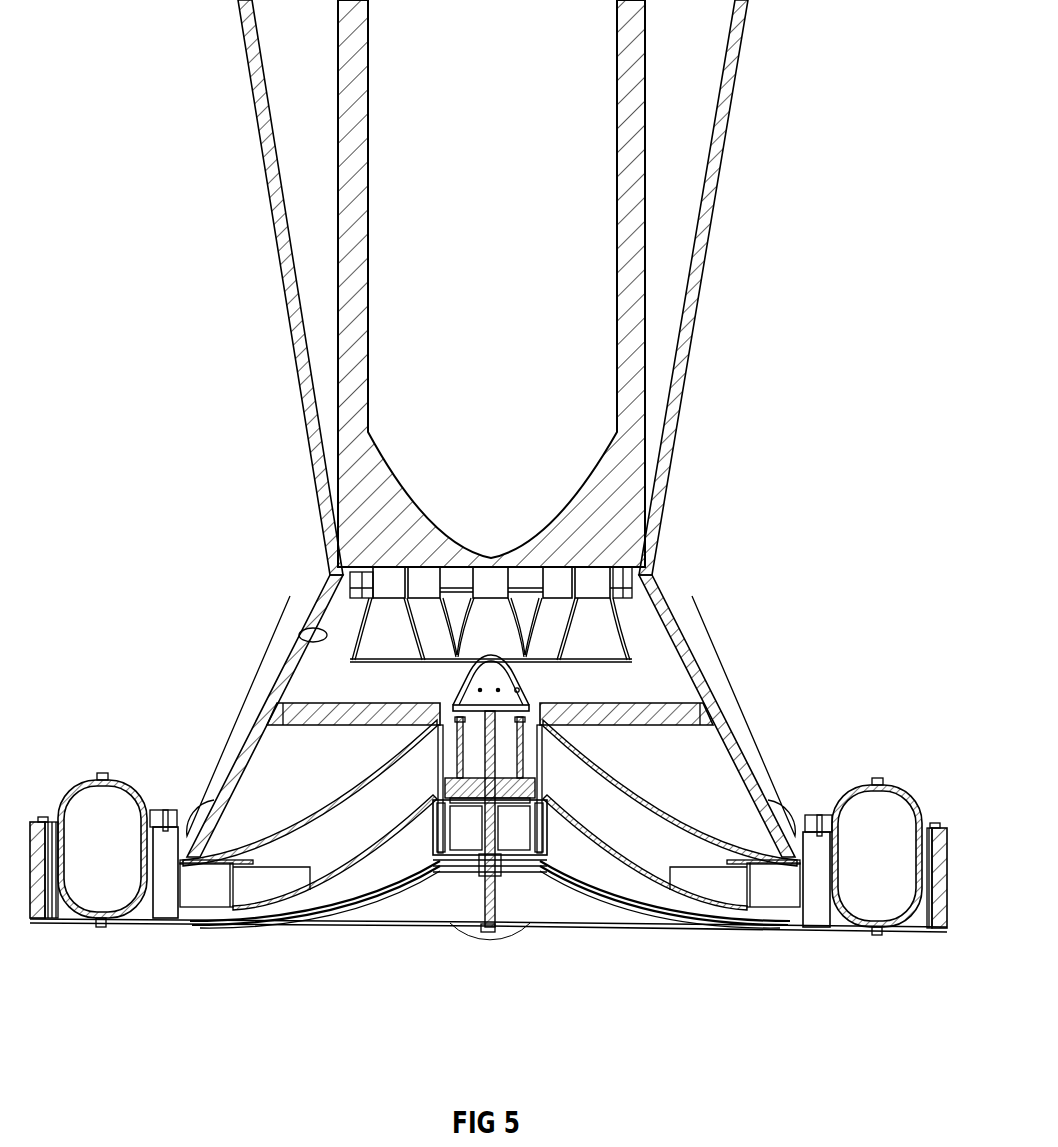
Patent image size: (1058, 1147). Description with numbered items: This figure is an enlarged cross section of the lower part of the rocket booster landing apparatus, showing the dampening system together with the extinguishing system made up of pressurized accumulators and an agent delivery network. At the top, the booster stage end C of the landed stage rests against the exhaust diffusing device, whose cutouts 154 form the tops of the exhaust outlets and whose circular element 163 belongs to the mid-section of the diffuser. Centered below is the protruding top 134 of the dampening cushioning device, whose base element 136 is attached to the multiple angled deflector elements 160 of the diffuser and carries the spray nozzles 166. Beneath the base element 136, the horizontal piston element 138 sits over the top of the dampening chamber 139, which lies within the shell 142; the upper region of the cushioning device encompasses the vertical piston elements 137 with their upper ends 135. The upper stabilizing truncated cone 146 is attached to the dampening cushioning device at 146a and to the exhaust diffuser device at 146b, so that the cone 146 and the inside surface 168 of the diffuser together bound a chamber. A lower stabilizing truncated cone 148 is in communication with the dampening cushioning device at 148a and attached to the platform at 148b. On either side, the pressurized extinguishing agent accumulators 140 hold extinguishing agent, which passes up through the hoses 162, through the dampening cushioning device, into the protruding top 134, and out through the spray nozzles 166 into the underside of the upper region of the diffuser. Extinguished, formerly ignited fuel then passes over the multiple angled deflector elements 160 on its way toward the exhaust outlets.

The booster stage end C is at (640, 580).
The protruding top 134 is at (493, 675).
The upper ends 135 is at (545, 732).
The base element 136 is at (529, 708).
The vertical piston elements 137 is at (457, 757).
The horizontal piston element 138 is at (455, 867).
The dampening chamber 139 is at (517, 837).
The pressurized extinguishing agent accumulators 140 is at (108, 900).
The shell 142 is at (352, 848).
The upper stabilizing truncated cone 146 is at (433, 787).
The attachment of upper stabilizing truncated cone to dampening cushioning device 146a is at (543, 727).
The attachment of upper stabilizing truncated cone to exhaust diffuser device 146b is at (180, 865).
The lower stabilizing truncated cone 148 is at (357, 853).
The communication of lower stabilizing truncated cone with dampening cushioning devi 148a is at (436, 793).
The attachment of lower stabilizing truncated cone to platform 148b is at (200, 926).
The cutouts 154 is at (640, 593).
The angled deflector elements 160 is at (657, 720).
The hoses 162 is at (378, 915).
The circular element 163 is at (697, 707).
The spray nozzles 166 is at (462, 687).
The inside surface 168 is at (300, 635).